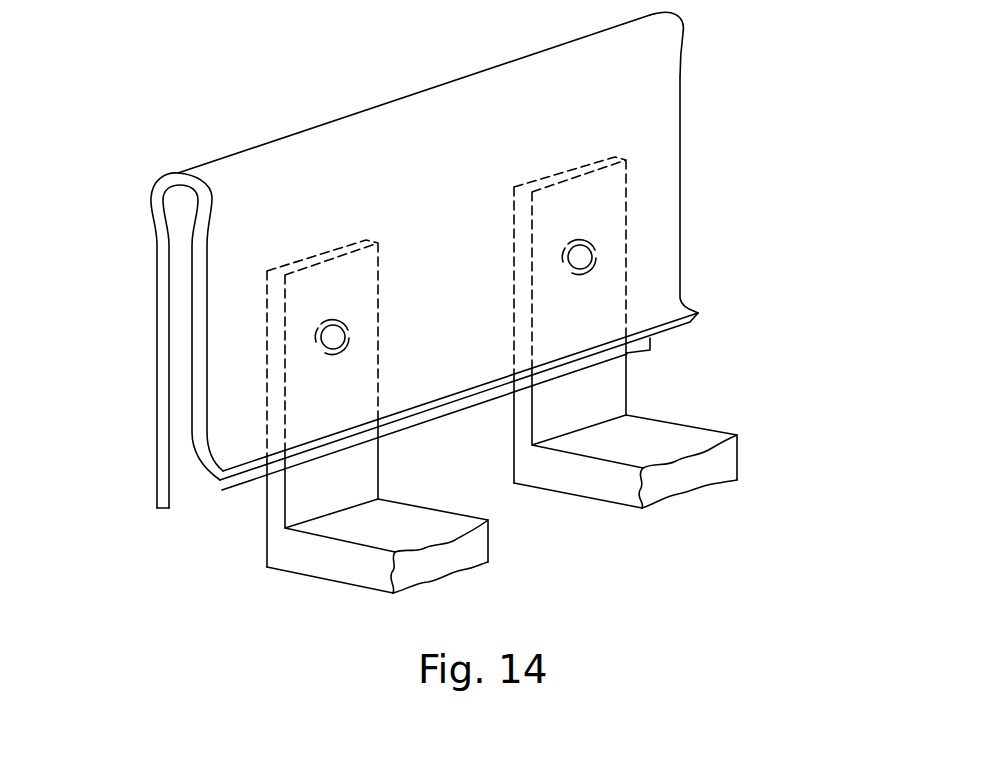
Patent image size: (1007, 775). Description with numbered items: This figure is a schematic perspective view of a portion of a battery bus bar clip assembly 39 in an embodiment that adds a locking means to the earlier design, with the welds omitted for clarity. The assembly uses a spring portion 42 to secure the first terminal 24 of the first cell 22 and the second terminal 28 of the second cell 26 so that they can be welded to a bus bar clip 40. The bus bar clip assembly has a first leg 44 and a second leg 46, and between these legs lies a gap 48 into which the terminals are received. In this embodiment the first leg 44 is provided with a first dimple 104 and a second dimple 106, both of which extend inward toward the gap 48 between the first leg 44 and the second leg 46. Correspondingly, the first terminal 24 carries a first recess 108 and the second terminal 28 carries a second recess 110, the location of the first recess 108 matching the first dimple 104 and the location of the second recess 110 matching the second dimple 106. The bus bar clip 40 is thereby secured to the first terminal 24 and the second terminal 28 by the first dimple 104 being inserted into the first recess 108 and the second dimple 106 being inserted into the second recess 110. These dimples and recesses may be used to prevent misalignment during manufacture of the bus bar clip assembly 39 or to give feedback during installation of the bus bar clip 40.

The first cell 22 is at (403, 530).
The first terminal 24 is at (317, 488).
The second cell 26 is at (668, 443).
The second terminal 28 is at (592, 400).
The battery bus bar clip assembly 39 is at (222, 110).
The bus bar clip 40 is at (718, 80).
The spring portion 42 is at (391, 127).
The first leg 44 is at (660, 245).
The second leg 46 is at (175, 333).
The gap 48 is at (197, 483).
The first dimple 104 is at (333, 325).
The second dimple 106 is at (582, 243).
The first recess 108 is at (332, 352).
The second recess 110 is at (590, 268).